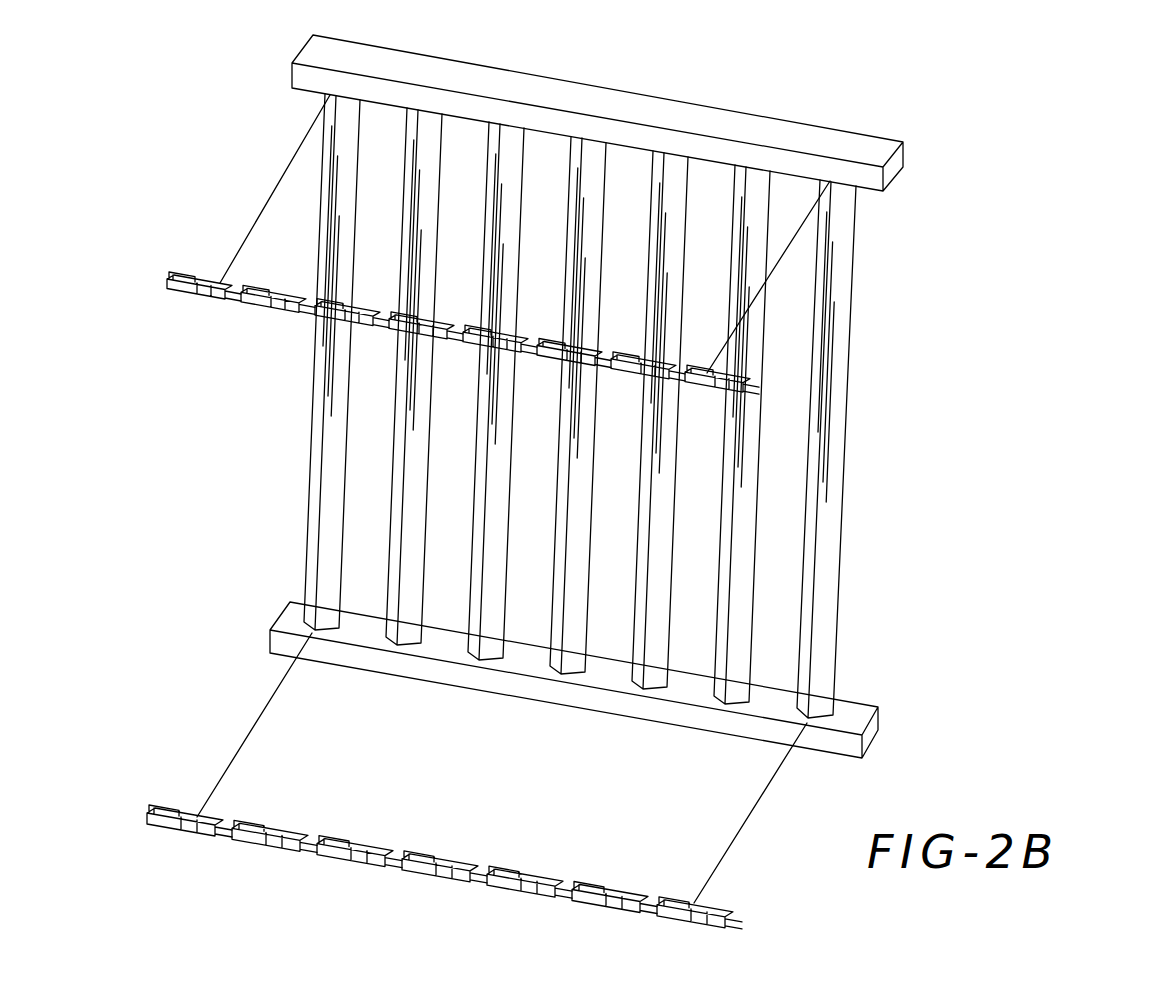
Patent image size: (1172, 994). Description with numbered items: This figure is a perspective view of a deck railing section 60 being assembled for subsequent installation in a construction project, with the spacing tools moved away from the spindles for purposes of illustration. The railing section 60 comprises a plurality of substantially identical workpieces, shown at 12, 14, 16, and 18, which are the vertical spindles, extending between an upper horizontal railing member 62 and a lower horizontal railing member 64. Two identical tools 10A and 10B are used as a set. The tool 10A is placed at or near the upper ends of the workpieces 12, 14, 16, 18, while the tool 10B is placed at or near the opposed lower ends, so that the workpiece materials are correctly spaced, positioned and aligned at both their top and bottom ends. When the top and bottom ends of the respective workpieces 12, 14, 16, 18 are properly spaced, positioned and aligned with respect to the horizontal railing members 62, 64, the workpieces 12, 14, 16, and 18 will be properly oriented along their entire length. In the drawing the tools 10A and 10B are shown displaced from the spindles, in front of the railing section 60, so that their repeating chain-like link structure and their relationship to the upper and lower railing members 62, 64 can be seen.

The tool 10A is at (230, 192).
The tool 10B is at (170, 790).
The workpiece 12 is at (467, 658).
The workpiece 14 is at (552, 676).
The workpiece 16 is at (636, 690).
The workpiece 18 is at (717, 703).
The railing section 60 is at (934, 436).
The horizontal railing member 62 is at (938, 147).
The horizontal railing member 64 is at (906, 717).